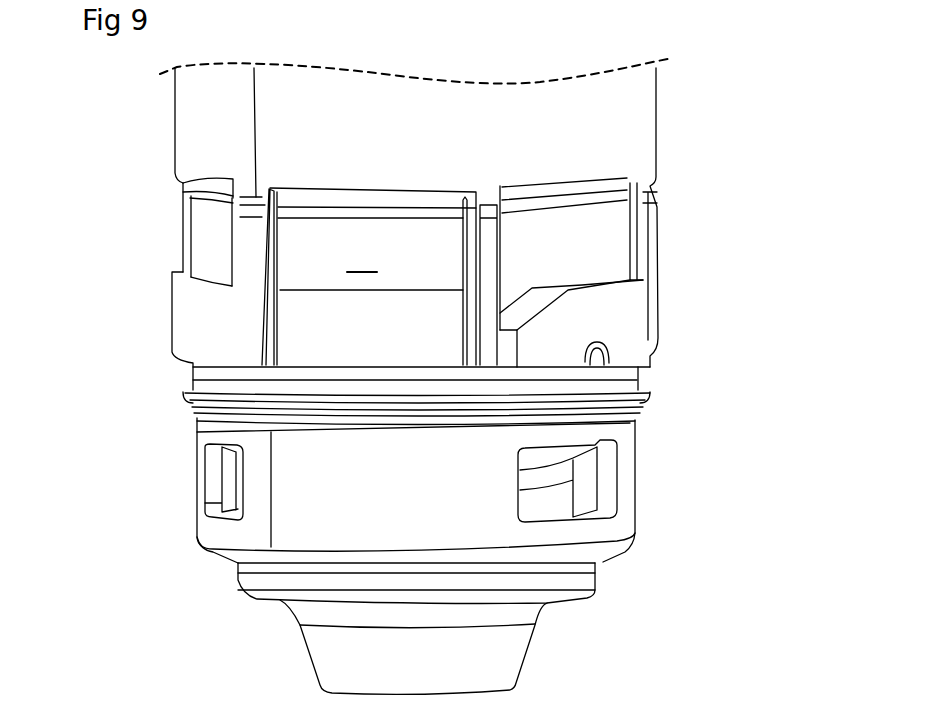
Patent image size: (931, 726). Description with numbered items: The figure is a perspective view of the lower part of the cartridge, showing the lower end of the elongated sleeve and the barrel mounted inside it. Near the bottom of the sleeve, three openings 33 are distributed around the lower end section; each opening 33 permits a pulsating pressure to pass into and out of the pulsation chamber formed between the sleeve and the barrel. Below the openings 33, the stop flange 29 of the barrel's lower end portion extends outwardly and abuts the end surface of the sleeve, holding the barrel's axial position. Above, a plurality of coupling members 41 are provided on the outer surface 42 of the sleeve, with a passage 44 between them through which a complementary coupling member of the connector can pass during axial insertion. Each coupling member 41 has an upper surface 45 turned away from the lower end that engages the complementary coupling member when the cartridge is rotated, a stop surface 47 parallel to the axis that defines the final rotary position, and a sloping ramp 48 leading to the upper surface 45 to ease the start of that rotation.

The stop flange 29 is at (237, 552).
The openings 33 is at (213, 472).
The coupling members 41 is at (187, 327).
The outer surface 42 is at (190, 136).
The passage 44 is at (421, 284).
The upper surface 45 is at (188, 277).
The stop surface 47 is at (232, 245).
The sloping ramp 48 is at (521, 307).